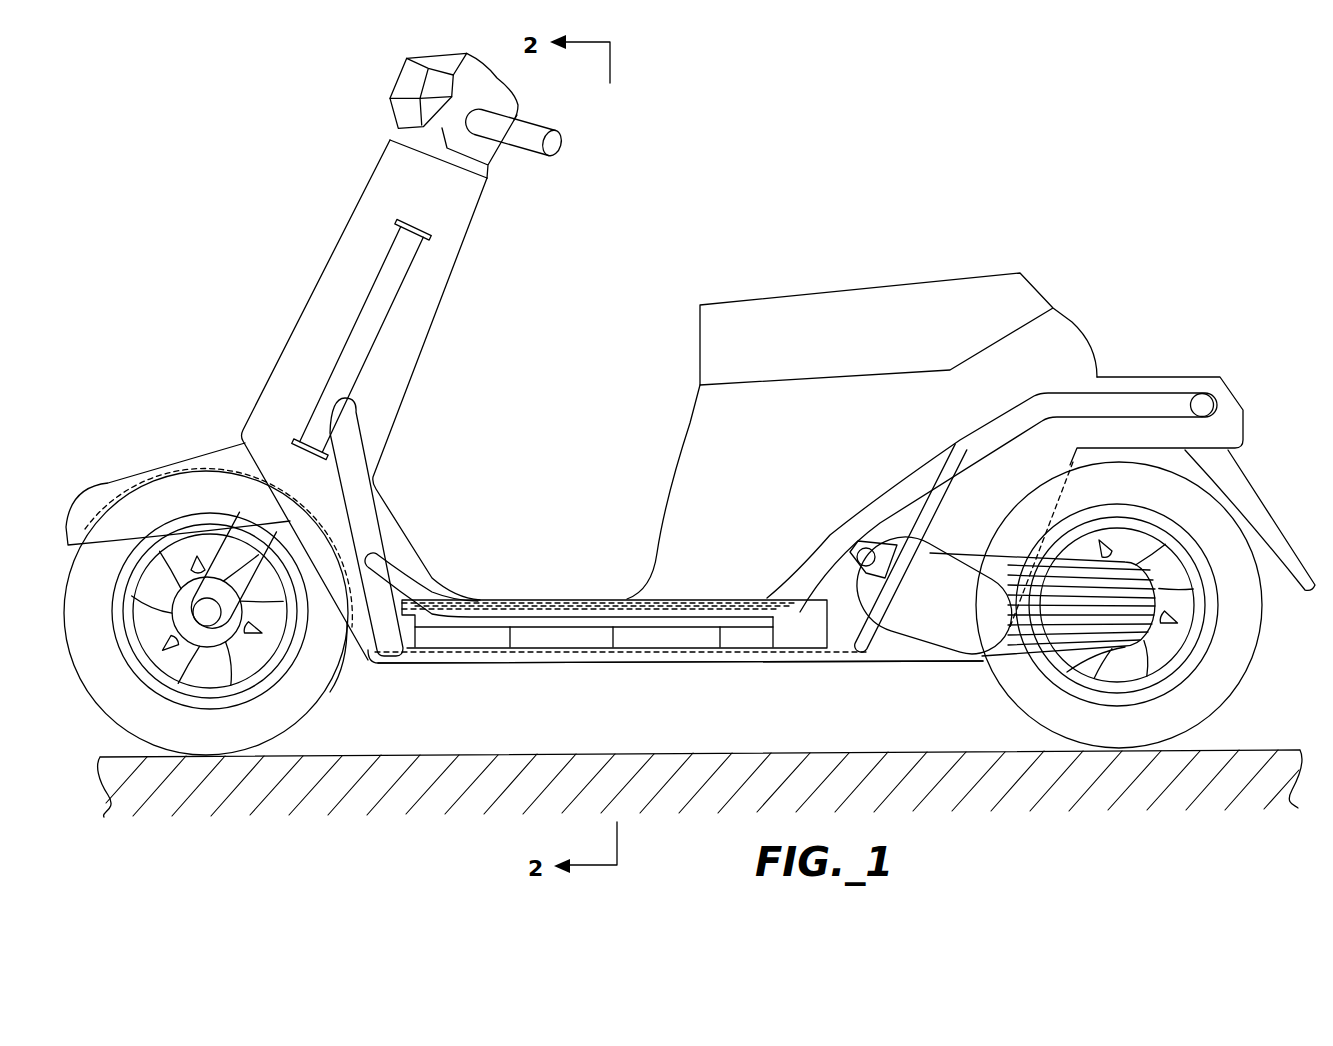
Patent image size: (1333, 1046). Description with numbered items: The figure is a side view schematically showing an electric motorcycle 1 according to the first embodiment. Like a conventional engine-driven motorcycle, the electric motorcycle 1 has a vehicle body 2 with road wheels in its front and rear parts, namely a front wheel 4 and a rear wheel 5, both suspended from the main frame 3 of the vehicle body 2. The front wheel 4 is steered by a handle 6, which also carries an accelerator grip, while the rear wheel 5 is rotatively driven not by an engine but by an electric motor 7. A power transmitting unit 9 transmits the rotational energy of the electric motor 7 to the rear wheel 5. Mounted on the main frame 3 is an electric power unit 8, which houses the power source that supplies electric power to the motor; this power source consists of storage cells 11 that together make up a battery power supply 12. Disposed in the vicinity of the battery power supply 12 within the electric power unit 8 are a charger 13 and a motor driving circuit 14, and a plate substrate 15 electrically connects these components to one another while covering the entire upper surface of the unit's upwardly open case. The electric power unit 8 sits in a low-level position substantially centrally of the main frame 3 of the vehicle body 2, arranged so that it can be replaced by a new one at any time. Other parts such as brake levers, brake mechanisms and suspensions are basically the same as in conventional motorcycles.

The electric motorcycle 1 is at (222, 280).
The vehicle body 2 is at (807, 295).
The main frame 3 is at (1003, 414).
The front wheel 4 is at (137, 717).
The rear wheel 5 is at (1192, 702).
The handle 6 is at (527, 134).
The electric motor 7 is at (897, 647).
The electric power unit 8 is at (490, 592).
The power transmitting unit 9 is at (1013, 668).
The storage cells 11 is at (537, 637).
The battery power supply 12 is at (635, 670).
The charger 13 is at (675, 687).
The motor driving circuit 14 is at (430, 622).
The plate substrate 15 is at (563, 600).